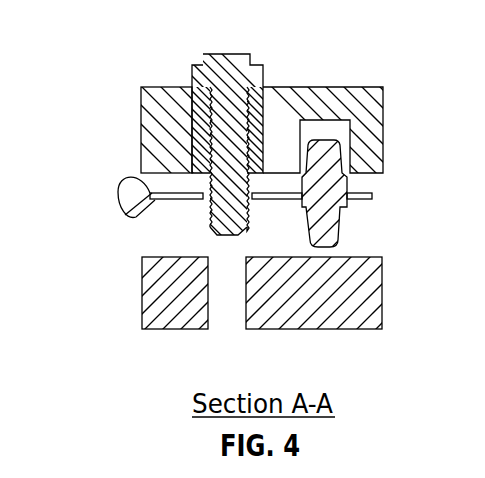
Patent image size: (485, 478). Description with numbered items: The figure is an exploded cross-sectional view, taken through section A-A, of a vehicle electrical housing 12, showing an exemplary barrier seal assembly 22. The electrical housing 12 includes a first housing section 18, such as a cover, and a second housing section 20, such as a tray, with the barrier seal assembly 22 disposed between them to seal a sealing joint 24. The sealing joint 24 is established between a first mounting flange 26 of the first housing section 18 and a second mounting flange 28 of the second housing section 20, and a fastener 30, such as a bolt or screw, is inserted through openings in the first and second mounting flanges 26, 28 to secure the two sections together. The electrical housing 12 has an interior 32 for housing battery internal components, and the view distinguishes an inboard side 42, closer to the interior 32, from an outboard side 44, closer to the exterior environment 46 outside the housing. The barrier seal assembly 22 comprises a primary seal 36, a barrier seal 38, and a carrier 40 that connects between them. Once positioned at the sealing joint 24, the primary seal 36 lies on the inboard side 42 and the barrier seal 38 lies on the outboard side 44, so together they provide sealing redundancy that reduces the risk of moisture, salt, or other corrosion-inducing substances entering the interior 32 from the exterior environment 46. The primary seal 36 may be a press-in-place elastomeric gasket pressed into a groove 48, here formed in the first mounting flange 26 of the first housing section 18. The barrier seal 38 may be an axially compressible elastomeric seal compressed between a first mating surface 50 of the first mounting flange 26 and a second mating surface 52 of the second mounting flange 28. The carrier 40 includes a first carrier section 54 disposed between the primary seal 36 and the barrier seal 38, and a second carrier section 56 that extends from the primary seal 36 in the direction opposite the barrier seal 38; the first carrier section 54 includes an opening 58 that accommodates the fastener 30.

The electrical housing 12 is at (100, 46).
The first housing section 18 is at (280, 110).
The second housing section 20 is at (314, 320).
The barrier seal assembly 22 is at (122, 222).
The sealing joint 24 is at (178, 230).
The first mounting flange 26 is at (175, 112).
The second mounting flange 28 is at (175, 319).
The fastener 30 is at (230, 82).
The interior 32 is at (469, 223).
The primary seal 36 is at (350, 192).
The barrier seal 38 is at (121, 176).
The carrier 40 is at (374, 197).
The inboard side 42 is at (385, 110).
The outboard side 44 is at (140, 110).
The exterior environment 46 is at (57, 222).
The groove 48 is at (340, 132).
The first mating surface 50 is at (139, 167).
The second mating surface 52 is at (156, 257).
The first carrier section 54 is at (284, 201).
The second carrier section 56 is at (358, 201).
The opening 58 is at (254, 203).